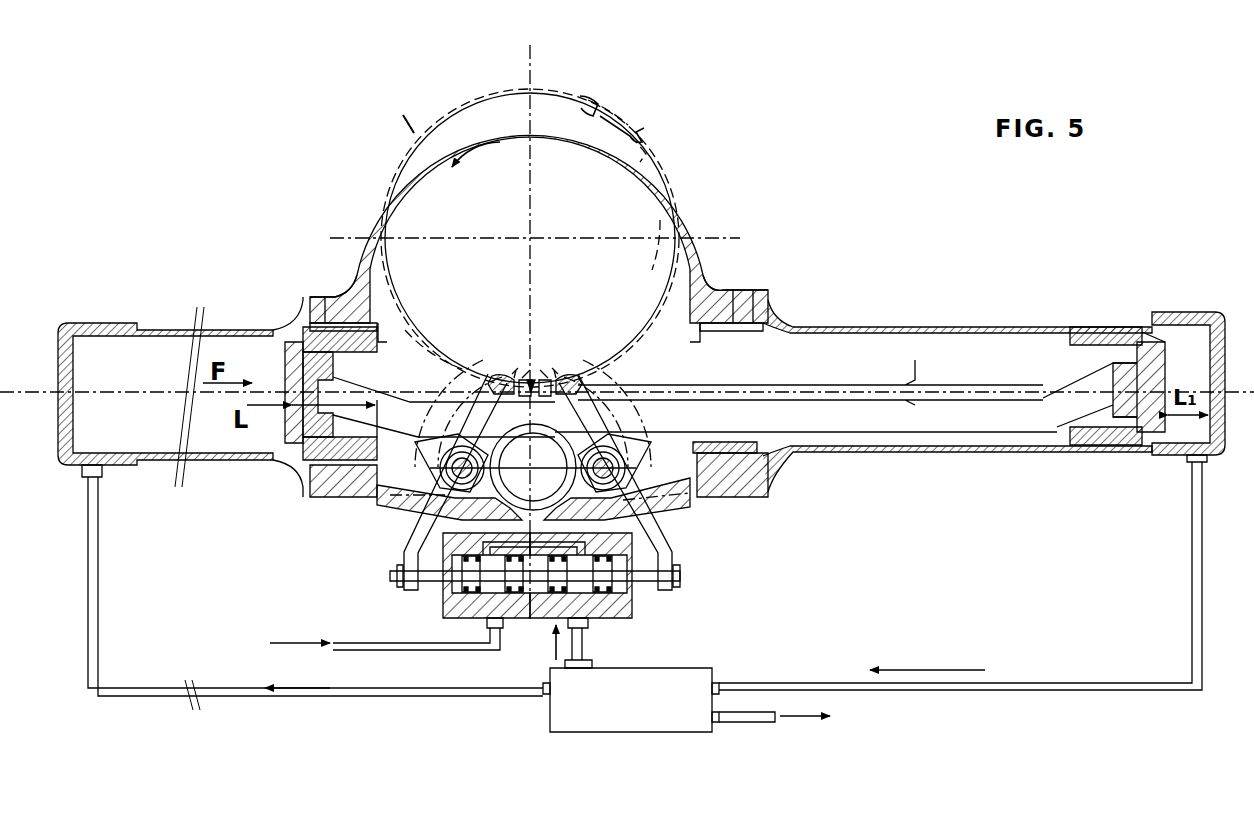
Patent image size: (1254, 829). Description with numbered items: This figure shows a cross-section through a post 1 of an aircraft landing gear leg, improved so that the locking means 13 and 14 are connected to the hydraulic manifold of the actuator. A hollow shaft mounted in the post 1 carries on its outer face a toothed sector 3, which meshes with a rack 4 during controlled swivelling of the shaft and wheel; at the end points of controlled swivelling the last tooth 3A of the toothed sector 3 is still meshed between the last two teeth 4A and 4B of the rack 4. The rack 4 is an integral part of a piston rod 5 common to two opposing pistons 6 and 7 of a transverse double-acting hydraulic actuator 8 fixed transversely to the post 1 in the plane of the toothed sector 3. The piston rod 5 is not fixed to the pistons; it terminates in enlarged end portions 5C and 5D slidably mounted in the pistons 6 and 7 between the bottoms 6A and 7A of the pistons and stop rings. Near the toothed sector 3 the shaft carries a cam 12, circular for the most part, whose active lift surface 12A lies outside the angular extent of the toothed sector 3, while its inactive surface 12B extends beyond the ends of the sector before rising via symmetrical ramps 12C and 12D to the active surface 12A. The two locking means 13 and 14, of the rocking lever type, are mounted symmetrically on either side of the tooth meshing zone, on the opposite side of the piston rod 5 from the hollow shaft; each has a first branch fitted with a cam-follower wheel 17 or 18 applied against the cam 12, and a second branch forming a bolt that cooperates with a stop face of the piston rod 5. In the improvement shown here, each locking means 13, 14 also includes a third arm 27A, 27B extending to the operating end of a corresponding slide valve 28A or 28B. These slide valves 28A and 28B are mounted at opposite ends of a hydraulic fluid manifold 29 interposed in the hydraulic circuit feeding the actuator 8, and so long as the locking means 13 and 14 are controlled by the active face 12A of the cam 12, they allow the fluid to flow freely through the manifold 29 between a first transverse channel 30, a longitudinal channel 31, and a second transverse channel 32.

The post 1 is at (479, 64).
The toothed sector 3 is at (640, 110).
The last tooth 3A is at (536, 376).
The rack 4 is at (912, 360).
The last tooth of rack 4A is at (520, 372).
The last tooth of rack 4B is at (553, 372).
The piston rod 5 is at (945, 408).
The enlarged end portion 5C is at (292, 433).
The enlarged end portion 5D is at (1142, 440).
The piston 6 is at (305, 452).
The bottom of piston 6A is at (300, 350).
The piston 7 is at (1112, 440).
The bottom of piston 7A is at (1168, 342).
The double-acting hydraulic actuator 8 is at (284, 300).
The cam 12 is at (662, 170).
The active lift surface 12A is at (410, 118).
The inactive surface 12B is at (668, 218).
The ramp 12C is at (482, 375).
The ramp 12D is at (615, 80).
The locking means 13 is at (412, 476).
The locking means 14 is at (656, 476).
The cam-follower wheel 17 is at (495, 378).
The cam-follower wheel 18 is at (578, 378).
The third arm 27A is at (395, 555).
The third arm 27B is at (676, 545).
The slide valve 28A is at (450, 589).
The slide valve 28B is at (633, 593).
The hydraulic fluid manifold 29 is at (548, 657).
The first transverse channel 30 is at (497, 600).
The longitudinal channel 31 is at (551, 510).
The second transverse channel 32 is at (583, 600).